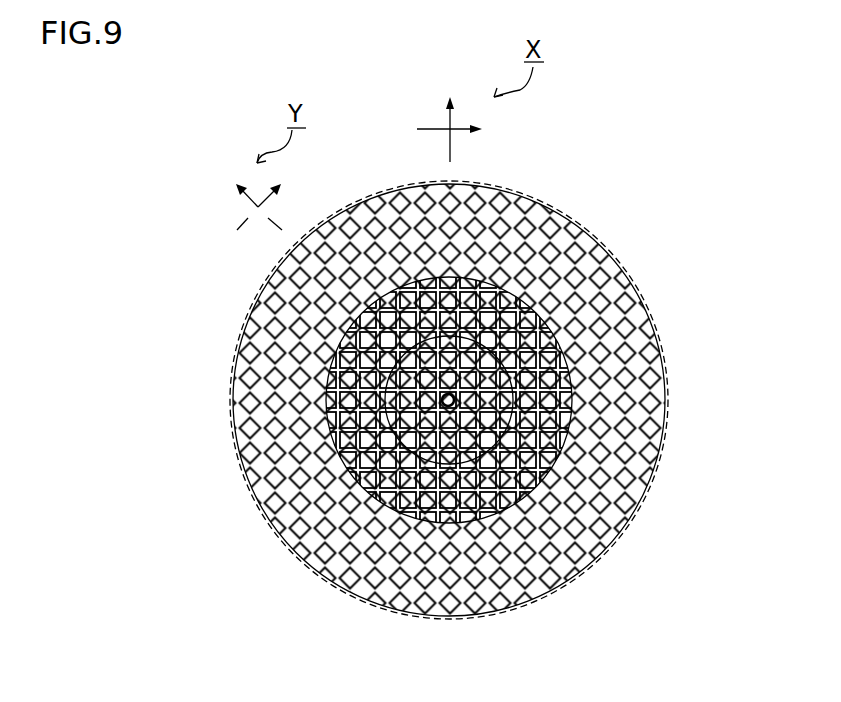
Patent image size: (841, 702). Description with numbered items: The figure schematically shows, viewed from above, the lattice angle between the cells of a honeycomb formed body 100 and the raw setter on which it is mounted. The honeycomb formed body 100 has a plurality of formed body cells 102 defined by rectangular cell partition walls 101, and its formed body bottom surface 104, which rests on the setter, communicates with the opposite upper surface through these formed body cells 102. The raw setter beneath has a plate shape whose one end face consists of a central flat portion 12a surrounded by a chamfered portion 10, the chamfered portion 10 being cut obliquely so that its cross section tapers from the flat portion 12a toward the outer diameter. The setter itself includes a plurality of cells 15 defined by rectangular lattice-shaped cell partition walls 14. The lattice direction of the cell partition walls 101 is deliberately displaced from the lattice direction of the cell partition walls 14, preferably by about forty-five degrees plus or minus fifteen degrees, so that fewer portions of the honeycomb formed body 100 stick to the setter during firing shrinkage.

The honeycomb formed body 100 is at (592, 167).
The cell partition walls 101 is at (660, 374).
The formed body cells 102 is at (660, 313).
The formed body bottom surface 104 is at (620, 260).
The flat portion 12a is at (570, 428).
The chamfered portion 10 is at (572, 485).
The cells 15 is at (562, 523).
The cell partition walls 14 is at (486, 512).